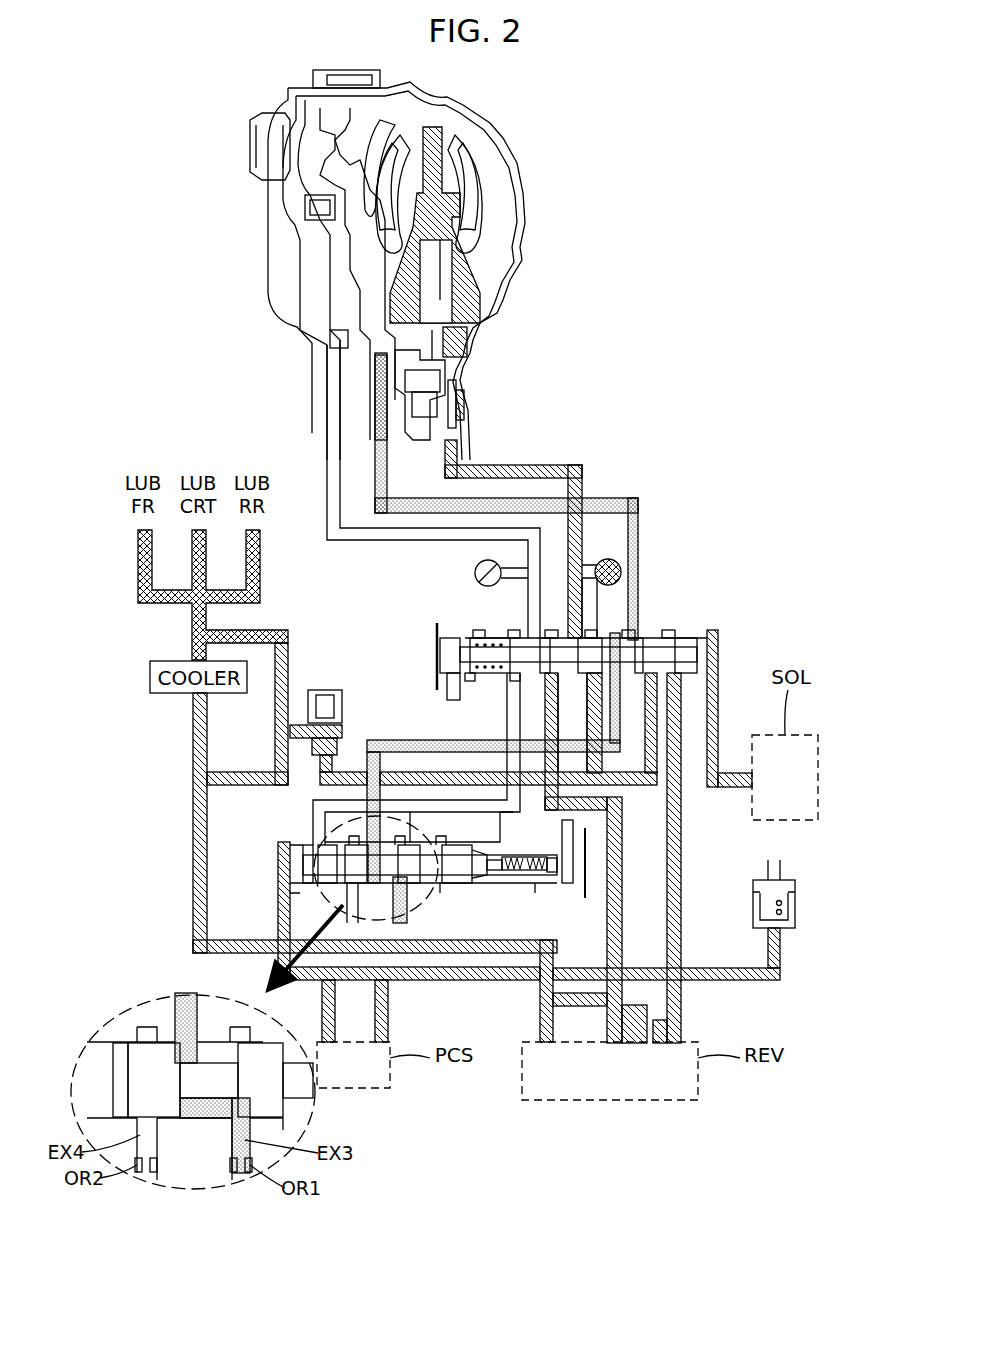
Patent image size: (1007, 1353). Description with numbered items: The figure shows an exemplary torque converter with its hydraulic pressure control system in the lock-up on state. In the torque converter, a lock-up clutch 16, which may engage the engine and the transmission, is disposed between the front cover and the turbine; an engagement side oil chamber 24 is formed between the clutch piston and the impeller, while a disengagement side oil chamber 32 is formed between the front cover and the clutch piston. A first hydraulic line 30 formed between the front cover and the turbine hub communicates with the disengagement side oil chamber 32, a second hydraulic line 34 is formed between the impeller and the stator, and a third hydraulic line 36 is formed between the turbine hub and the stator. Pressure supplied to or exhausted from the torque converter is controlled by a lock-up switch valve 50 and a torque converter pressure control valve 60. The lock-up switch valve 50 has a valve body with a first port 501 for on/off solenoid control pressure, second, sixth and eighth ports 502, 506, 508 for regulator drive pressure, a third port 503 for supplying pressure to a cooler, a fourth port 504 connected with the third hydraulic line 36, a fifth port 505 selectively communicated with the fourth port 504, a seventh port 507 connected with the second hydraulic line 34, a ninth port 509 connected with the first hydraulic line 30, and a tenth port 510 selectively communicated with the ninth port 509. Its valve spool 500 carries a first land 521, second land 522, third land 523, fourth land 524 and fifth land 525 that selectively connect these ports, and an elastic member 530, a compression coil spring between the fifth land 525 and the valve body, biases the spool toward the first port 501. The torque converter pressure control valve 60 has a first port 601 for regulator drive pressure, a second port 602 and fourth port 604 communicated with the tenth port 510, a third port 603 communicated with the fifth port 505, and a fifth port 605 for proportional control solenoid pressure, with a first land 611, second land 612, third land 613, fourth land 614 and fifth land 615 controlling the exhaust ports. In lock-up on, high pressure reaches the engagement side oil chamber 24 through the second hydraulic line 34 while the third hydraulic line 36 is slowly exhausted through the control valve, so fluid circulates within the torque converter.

The lock-up clutch 16 is at (375, 110).
The engagement side oil chamber 24 is at (440, 190).
The disengagement side oil chamber 32 is at (300, 230).
The first hydraulic line 30 is at (330, 380).
The second hydraulic line 34 is at (527, 470).
The third hydraulic line 36 is at (640, 520).
The lock-up switch valve 50 is at (565, 798).
The valve spool 500 is at (537, 798).
The first port 501 is at (715, 675).
The second port 502 is at (678, 675).
The third port 503 is at (652, 700).
The fourth port 504 is at (632, 638).
The fifth port 505 is at (618, 675).
The sixth port 506 is at (592, 680).
The seventh port 507 is at (580, 648).
The eighth port 508 is at (548, 682).
The ninth port 509 is at (532, 638).
The tenth port 510 is at (505, 680).
The first land 521 is at (686, 650).
The second land 522 is at (640, 645).
The third land 523 is at (600, 655).
The fourth land 524 is at (545, 648).
The fifth land 525 is at (500, 648).
The elastic member 530 is at (437, 655).
The torque converter pressure control valve 60 is at (353, 960).
The first port 601 is at (568, 885).
The second port 602 is at (422, 840).
The third port 603 is at (373, 842).
The fourth port 604 is at (318, 840).
The fifth port 605 is at (290, 880).
The first land 611 is at (521, 857).
The second land 612 is at (458, 880).
The third land 613 is at (400, 880).
The fourth land 614 is at (340, 880).
The fifth land 615 is at (308, 885).